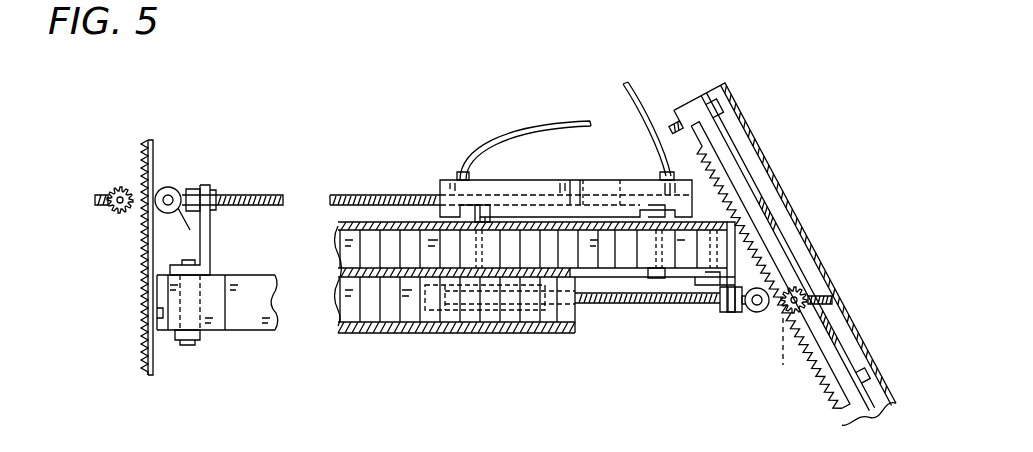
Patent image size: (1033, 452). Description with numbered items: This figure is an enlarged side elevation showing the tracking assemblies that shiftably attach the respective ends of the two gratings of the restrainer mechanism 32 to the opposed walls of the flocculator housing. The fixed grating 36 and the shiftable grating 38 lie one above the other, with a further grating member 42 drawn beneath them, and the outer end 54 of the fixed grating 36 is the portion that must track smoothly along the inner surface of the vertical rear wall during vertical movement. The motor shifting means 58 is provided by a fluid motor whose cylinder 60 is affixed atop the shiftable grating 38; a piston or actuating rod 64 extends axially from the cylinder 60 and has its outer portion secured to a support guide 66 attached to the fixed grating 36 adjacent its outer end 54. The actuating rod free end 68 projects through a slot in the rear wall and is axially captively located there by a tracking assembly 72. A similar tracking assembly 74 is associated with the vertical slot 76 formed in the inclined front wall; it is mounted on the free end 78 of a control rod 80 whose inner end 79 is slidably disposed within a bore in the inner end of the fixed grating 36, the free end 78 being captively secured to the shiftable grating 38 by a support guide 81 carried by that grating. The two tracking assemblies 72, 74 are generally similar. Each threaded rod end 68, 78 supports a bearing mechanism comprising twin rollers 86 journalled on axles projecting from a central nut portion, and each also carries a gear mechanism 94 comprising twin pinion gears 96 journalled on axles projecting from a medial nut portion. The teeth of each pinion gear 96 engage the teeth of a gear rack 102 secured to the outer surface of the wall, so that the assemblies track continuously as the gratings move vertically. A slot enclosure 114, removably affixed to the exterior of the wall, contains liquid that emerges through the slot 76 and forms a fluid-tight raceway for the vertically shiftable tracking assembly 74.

The restrainer mechanism 32 is at (324, 341).
The fixed grating 36 is at (235, 331).
The shiftable grating 38 is at (372, 240).
The lower rail 42 is at (358, 333).
The outer end 54 is at (160, 313).
The motor shifting means 58 is at (512, 166).
The cylinder 60 is at (568, 185).
The actuating rod 64 is at (245, 195).
The support guide 66 is at (212, 237).
The actuating rod free end 68 is at (97, 195).
The tracking assembly 72 is at (178, 178).
The tracking assembly 74 is at (812, 286).
The vertical slot 76 is at (782, 366).
The control rod free end 78 is at (838, 301).
The control rod inner end 79 is at (548, 312).
The control rod 80 is at (432, 312).
The support guide 81 is at (722, 313).
The rollers 86 is at (172, 213).
The gear mechanism 94 is at (120, 224).
The pinion gears 96 is at (112, 190).
The gear rack 102 is at (140, 355).
The slot enclosure 114 is at (789, 200).